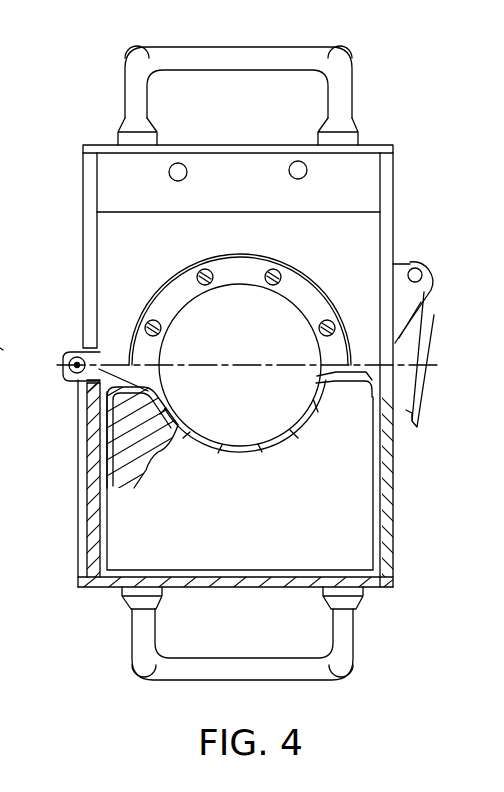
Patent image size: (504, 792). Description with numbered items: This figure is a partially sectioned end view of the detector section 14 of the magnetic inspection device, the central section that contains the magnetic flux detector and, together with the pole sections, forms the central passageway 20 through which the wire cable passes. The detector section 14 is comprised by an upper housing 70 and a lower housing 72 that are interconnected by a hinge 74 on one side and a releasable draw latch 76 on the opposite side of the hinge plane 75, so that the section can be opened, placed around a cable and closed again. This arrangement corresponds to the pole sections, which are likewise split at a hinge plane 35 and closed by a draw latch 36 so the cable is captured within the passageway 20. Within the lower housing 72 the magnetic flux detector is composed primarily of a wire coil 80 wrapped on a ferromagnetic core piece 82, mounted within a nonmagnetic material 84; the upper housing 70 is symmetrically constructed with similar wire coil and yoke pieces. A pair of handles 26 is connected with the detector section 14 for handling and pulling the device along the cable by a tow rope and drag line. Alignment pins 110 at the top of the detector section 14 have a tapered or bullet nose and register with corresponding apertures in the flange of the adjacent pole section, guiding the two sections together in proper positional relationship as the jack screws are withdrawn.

The detector section 14 is at (387, 120).
The central passageway 20 is at (182, 311).
The handles 26 is at (237, 47).
The hinge plane 35 is at (0, 351).
The draw latch 36 is at (12, 335).
The upper housing 70 is at (108, 248).
The lower housing 72 is at (98, 485).
The hinge 74 is at (75, 356).
The hinge plane 75 is at (428, 372).
The draw latch 76 is at (422, 325).
The wire coil 80 is at (143, 411).
The ferromagnetic core piece 82 is at (163, 413).
The nonmagnetic material 84 is at (332, 372).
The alignment pins 110 is at (289, 176).